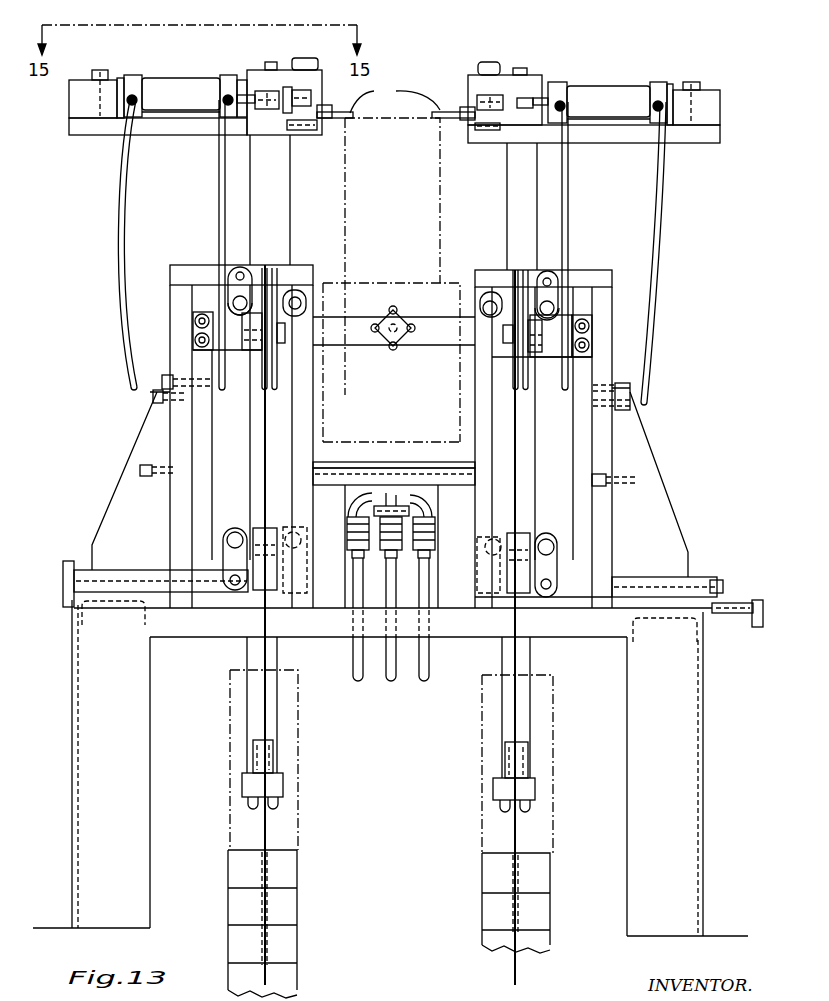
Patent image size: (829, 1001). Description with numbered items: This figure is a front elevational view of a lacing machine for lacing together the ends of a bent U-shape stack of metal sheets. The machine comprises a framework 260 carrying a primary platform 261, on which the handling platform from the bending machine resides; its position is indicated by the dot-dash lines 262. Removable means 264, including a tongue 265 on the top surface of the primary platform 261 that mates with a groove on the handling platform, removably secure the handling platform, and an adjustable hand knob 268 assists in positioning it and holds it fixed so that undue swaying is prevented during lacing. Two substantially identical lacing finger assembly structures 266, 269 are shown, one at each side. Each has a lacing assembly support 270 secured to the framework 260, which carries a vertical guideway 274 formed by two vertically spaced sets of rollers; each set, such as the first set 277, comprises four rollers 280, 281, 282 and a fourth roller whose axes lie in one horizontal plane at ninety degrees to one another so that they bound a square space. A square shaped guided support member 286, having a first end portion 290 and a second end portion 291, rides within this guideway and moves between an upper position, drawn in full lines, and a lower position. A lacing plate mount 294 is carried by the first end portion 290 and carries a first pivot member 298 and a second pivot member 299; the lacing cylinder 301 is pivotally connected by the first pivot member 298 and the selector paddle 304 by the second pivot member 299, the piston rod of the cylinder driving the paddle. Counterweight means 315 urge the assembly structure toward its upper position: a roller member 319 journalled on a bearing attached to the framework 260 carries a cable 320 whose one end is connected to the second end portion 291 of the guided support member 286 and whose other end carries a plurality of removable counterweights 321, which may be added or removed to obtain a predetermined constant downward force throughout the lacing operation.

The first pivot member 298 is at (98, 70).
The lacing cylinder 301 is at (190, 78).
The second pivot member 299 is at (300, 62).
The selector paddle 304 is at (396, 102).
The second lacing finger assembly structure 269 is at (200, 191).
The first lacing finger assembly structure 266 is at (483, 206).
The guided support member 286 is at (540, 198).
The first end portion 290 is at (569, 155).
The lacing plate mount 294 is at (683, 143).
The lacing assembly support 270 is at (648, 462).
The vertical guideway 274 is at (542, 379).
The first set of rollers 277 is at (557, 283).
The roller 280 is at (560, 311).
The roller 281 is at (478, 306).
The roller 282 is at (528, 533).
The roller member 319 is at (527, 386).
The dot-dash lines 262 is at (443, 282).
The second adjustable hand knob 268 is at (414, 330).
The primary platform 261 is at (437, 478).
The removable means 264 is at (375, 546).
The tongue 265 is at (411, 462).
The framework 260 is at (90, 688).
The cable 320 is at (507, 702).
The second end portion 291 is at (523, 715).
The counterweight means 315 is at (538, 768).
The counterweights 321 is at (540, 906).